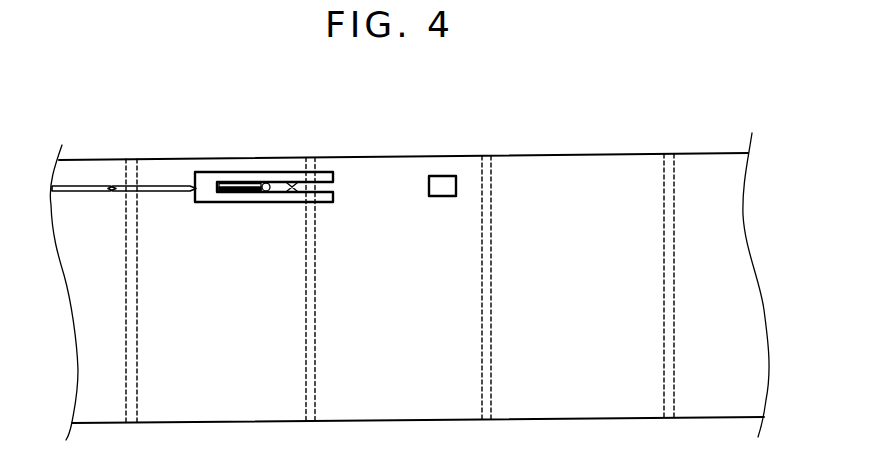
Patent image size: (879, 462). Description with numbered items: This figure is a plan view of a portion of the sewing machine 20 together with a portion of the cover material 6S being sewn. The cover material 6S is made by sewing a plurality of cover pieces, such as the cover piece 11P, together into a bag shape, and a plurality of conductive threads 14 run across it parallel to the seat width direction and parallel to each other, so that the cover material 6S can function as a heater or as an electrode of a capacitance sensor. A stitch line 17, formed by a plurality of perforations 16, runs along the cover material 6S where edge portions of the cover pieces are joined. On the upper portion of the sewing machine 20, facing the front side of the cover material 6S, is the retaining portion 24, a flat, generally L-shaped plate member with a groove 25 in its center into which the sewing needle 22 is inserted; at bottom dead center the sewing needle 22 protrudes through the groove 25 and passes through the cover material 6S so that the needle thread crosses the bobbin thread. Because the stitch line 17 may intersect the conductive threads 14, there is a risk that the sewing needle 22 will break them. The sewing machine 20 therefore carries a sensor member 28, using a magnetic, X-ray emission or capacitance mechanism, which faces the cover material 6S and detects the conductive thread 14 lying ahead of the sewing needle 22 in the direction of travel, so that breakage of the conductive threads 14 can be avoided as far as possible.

The cover piece 11P is at (409, 266).
The cover material 6S is at (708, 187).
The conductive thread 14 is at (681, 438).
The perforation 16 is at (124, 144).
The stitch line 17 is at (81, 185).
The sewing machine 20 is at (340, 145).
The sewing needle 22 is at (268, 184).
The retaining portion 24 is at (279, 145).
The groove 25 is at (293, 186).
The sensor member 28 is at (443, 186).